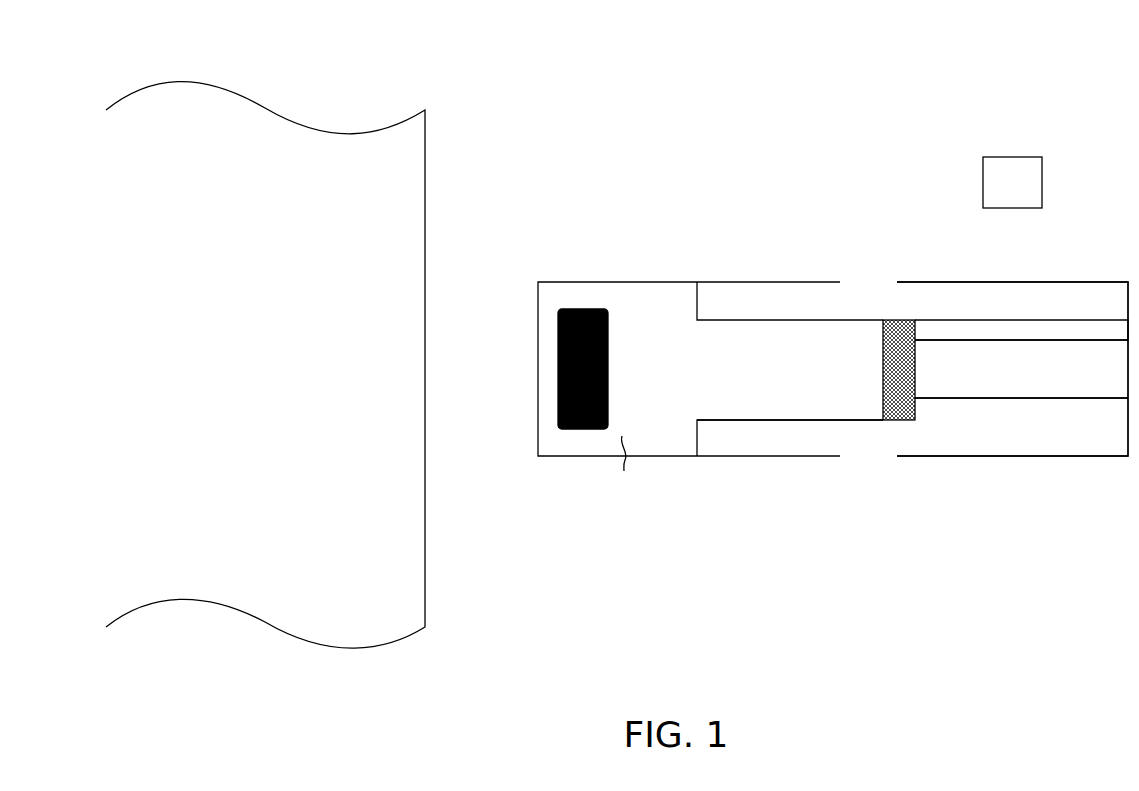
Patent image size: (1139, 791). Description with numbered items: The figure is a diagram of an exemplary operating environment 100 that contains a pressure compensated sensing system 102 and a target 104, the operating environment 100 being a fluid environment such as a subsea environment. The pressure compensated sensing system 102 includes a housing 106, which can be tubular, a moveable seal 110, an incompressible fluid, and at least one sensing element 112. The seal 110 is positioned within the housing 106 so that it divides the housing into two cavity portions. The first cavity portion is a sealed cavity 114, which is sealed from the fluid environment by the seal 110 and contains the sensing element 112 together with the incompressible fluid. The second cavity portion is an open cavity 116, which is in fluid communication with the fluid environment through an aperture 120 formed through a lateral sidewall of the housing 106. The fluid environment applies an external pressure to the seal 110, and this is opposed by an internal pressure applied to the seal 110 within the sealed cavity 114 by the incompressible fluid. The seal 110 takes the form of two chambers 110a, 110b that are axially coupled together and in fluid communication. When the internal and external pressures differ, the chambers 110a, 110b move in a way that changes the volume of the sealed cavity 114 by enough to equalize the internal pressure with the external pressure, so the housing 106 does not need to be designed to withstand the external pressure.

The operating environment 100 is at (505, 77).
The pressure compensated sensing system 102 is at (820, 197).
The target 104 is at (311, 357).
The housing 106 is at (1078, 280).
The seal 110 is at (745, 319).
The chamber 110a is at (858, 421).
The chamber 110b is at (1078, 399).
The sensing element 112 is at (583, 308).
The sealed cavity 114 is at (680, 381).
The open cavity 116 is at (1084, 326).
The aperture 120 is at (872, 280).